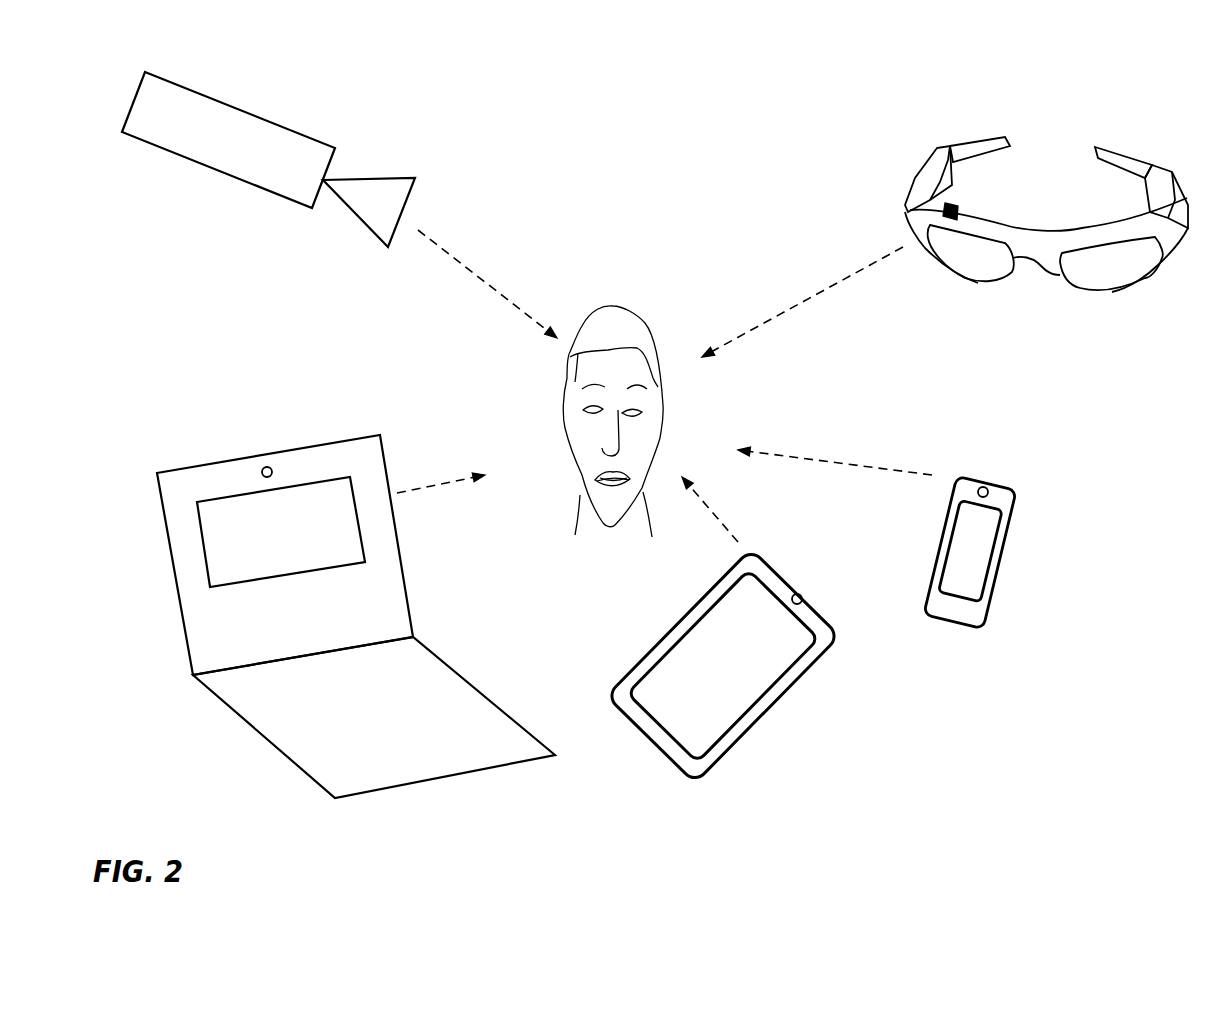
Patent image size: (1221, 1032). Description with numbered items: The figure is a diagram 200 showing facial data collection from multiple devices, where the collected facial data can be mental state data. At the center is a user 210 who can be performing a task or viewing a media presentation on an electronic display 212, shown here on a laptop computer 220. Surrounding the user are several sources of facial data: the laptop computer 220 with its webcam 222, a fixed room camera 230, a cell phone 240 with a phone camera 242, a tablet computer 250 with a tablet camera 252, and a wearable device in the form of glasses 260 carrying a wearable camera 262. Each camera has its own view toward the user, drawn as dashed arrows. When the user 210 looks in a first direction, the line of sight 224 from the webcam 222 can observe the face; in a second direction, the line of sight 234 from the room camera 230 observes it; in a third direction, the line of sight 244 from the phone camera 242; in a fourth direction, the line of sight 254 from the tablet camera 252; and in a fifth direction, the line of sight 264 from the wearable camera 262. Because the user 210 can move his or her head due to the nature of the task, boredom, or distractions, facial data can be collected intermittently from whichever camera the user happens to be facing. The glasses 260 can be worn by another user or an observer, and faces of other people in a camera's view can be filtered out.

The diagram 200 is at (1094, 767).
The user 210 is at (660, 338).
The electronic display 212 is at (281, 532).
The laptop computer 220 is at (232, 708).
The webcam 222 is at (268, 467).
The line of sight 224 is at (443, 490).
The room camera 230 is at (268, 159).
The line of sight 234 is at (497, 287).
The cell phone 240 is at (957, 630).
The phone camera 242 is at (987, 487).
The line of sight 244 is at (843, 462).
The tablet computer 250 is at (780, 708).
The tablet camera 252 is at (797, 594).
The line of sight 254 is at (722, 518).
The glasses 260 is at (1137, 287).
The wearable camera 262 is at (955, 209).
The line of sight 264 is at (797, 302).